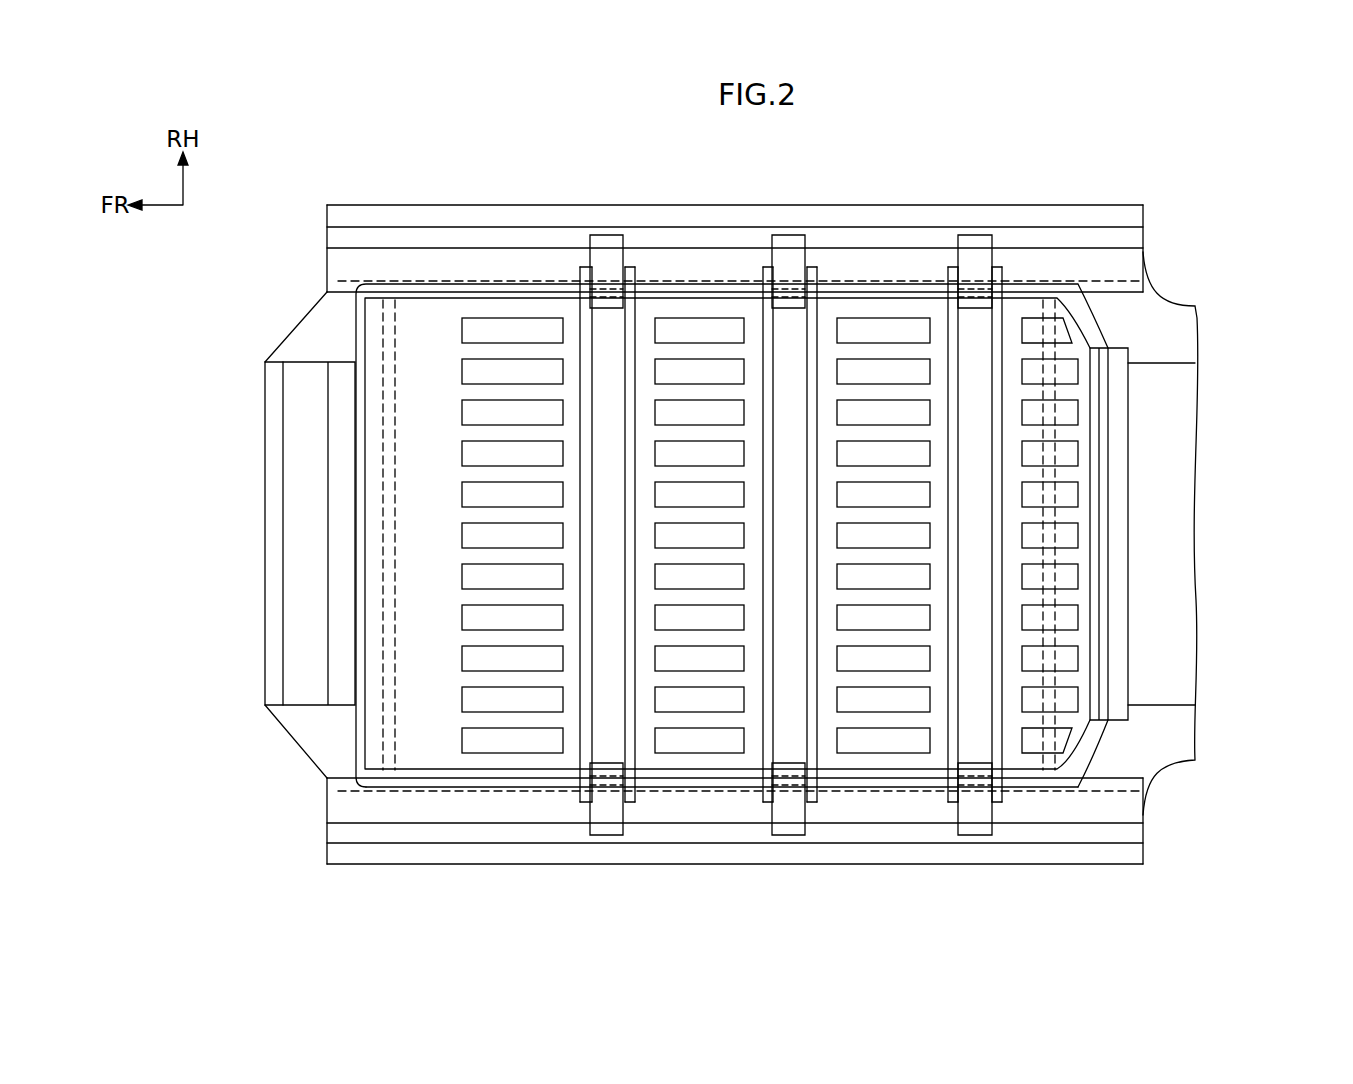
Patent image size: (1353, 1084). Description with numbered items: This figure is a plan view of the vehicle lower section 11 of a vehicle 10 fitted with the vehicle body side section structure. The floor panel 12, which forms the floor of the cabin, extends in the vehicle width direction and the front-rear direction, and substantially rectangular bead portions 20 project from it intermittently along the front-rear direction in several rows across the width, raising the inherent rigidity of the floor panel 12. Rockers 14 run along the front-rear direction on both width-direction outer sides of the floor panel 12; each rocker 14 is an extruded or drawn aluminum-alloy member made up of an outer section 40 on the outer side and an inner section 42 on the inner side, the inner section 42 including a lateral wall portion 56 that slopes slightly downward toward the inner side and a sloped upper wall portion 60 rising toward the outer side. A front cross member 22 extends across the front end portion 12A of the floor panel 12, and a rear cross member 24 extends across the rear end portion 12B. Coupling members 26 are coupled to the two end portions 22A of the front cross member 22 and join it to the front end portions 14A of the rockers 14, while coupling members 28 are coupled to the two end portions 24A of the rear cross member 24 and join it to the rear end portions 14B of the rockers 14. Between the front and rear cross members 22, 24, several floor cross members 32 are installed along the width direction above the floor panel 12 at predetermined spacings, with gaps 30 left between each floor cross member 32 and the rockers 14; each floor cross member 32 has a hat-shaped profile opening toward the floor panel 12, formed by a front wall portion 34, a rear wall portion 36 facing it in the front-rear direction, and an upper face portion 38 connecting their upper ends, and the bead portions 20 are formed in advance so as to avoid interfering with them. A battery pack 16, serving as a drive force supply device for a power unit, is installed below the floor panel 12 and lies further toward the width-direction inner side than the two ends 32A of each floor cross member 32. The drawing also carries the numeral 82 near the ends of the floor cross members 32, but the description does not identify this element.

The vehicle 10 is at (741, 521).
The vehicle lower section 11 is at (741, 521).
The floor panel 12 is at (796, 526).
The front end portion 12A is at (376, 335).
The rear end portion 12B is at (1075, 328).
The rocker 14 is at (676, 538).
The front end portion 14A is at (337, 219).
The rear end portion 14B is at (1137, 219).
The battery pack 16 is at (500, 776).
The bead portion 20 is at (492, 412).
The front cross member 22 is at (303, 540).
The end portion 22A is at (305, 371).
The rear cross member 24 is at (1135, 516).
The end portion 24A is at (1128, 354).
The coupling member 26 is at (322, 337).
The coupling member 28 is at (1178, 325).
The gap 30 is at (628, 262).
The floor cross member 32 is at (628, 318).
The end 32A is at (578, 310).
The front wall portion 34 is at (585, 315).
The rear wall portion 36 is at (628, 335).
The upper face portion 38 is at (605, 347).
The outer section 40 is at (414, 216).
The inner section 42 is at (243, 225).
The lateral wall portion 56 is at (338, 268).
The sloped upper wall portion 60 is at (338, 238).
The engaging tab 82 is at (607, 260).